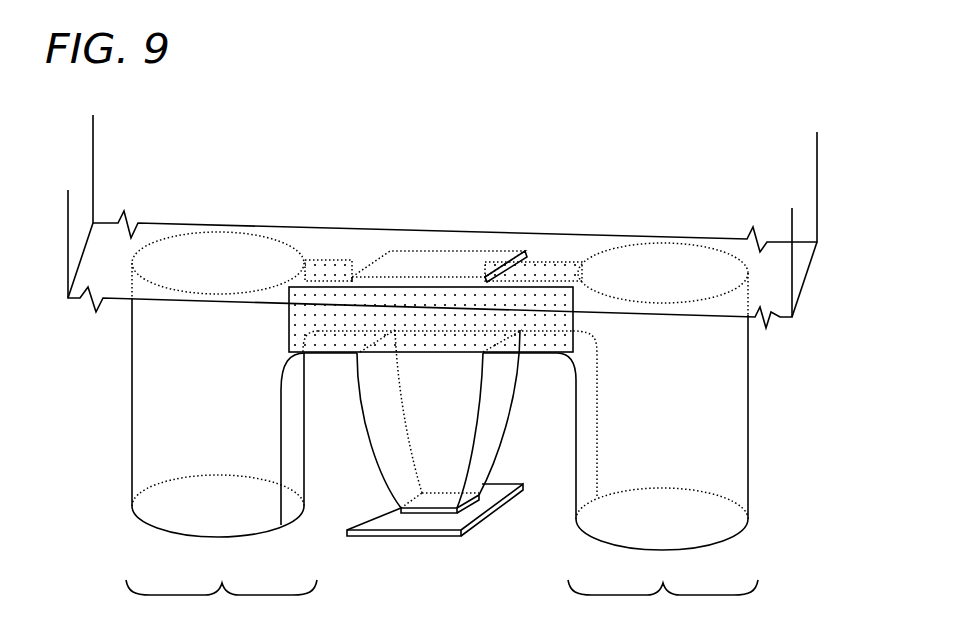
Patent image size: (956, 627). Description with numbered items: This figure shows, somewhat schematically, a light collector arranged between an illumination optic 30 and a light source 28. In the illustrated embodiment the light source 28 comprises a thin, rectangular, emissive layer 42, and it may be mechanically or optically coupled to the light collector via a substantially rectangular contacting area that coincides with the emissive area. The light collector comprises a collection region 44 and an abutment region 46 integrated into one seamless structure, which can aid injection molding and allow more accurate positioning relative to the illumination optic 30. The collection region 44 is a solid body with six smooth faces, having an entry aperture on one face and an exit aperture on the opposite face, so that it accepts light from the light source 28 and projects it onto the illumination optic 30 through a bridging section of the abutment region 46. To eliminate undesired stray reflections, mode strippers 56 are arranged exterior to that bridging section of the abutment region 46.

The light source 28 is at (488, 518).
The illumination optic 30 is at (222, 302).
The emissive layer 42 is at (480, 496).
The collection region 44 is at (345, 492).
The abutment region 46 is at (442, 430).
The mode strippers 56 is at (537, 262).